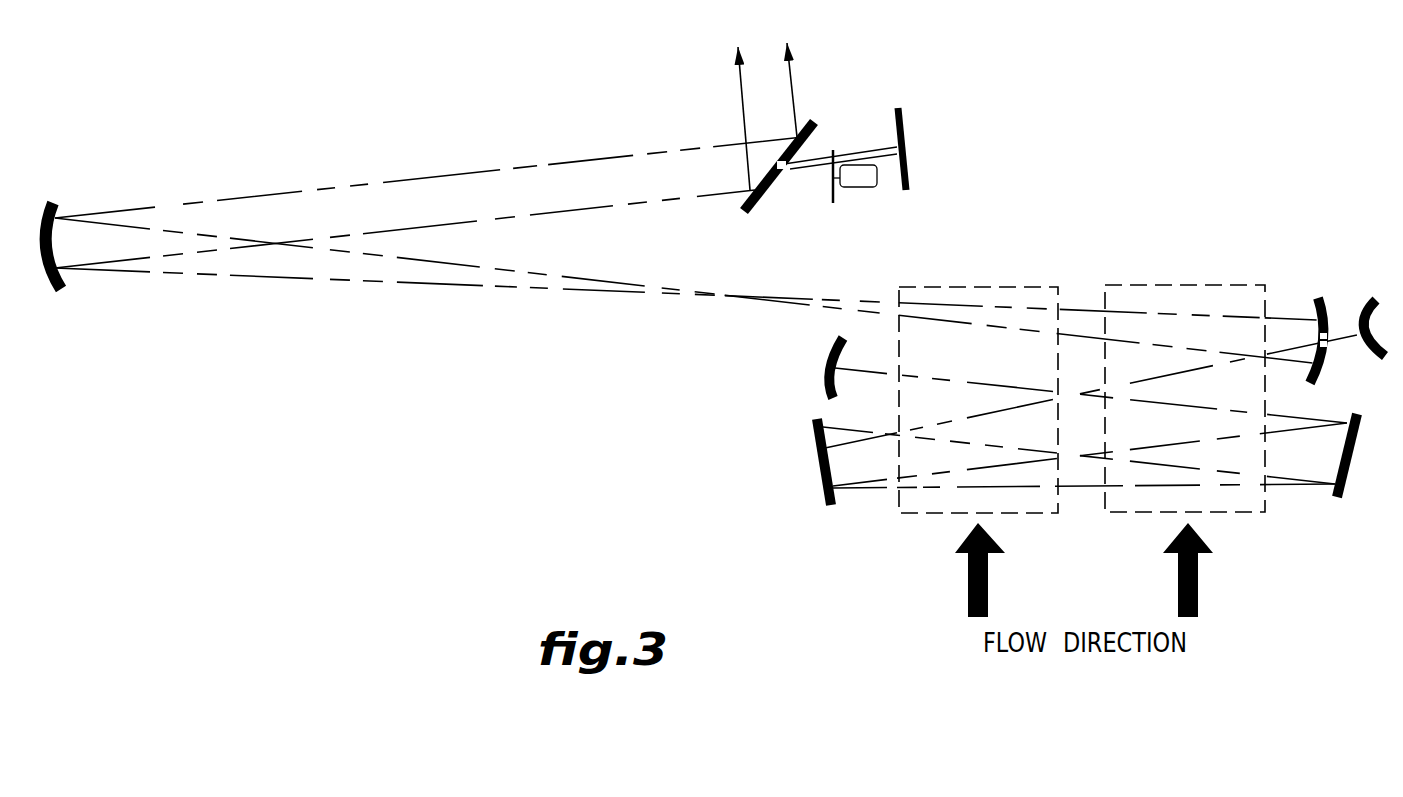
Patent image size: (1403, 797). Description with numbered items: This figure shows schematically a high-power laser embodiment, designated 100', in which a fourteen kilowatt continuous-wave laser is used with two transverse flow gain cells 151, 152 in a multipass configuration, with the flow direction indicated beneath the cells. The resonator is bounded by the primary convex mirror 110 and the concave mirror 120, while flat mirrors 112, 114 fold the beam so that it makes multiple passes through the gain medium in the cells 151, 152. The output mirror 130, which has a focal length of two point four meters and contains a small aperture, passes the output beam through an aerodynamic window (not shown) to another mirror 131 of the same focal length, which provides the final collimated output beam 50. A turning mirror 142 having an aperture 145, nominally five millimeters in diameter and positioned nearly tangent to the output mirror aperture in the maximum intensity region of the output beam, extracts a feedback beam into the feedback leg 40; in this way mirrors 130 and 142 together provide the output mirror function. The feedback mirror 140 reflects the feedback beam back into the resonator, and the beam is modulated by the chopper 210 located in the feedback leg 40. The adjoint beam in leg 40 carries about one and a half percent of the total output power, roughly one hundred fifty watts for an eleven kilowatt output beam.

The mirror 131 is at (43, 217).
The final collimated output beam 50 is at (715, 123).
The feedback leg 40 is at (857, 128).
The feedback mirror 140 is at (905, 123).
The turning mirror 142 is at (740, 210).
The aperture 145 is at (793, 177).
The chopper 210 is at (837, 203).
The transverse flow gain cell 151 is at (950, 285).
The transverse flow gain cell 152 is at (1158, 283).
The output mirror 130 is at (1317, 297).
The concave mirror 120 is at (1370, 300).
The primary convex mirror 110 is at (830, 345).
The flat mirror 112 is at (813, 440).
The flat mirror 114 is at (1350, 463).
The multipass optical measuring system 100' is at (911, 704).